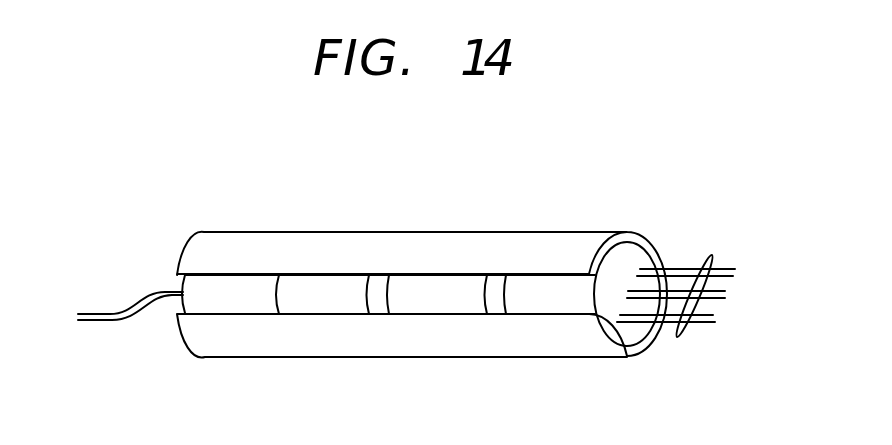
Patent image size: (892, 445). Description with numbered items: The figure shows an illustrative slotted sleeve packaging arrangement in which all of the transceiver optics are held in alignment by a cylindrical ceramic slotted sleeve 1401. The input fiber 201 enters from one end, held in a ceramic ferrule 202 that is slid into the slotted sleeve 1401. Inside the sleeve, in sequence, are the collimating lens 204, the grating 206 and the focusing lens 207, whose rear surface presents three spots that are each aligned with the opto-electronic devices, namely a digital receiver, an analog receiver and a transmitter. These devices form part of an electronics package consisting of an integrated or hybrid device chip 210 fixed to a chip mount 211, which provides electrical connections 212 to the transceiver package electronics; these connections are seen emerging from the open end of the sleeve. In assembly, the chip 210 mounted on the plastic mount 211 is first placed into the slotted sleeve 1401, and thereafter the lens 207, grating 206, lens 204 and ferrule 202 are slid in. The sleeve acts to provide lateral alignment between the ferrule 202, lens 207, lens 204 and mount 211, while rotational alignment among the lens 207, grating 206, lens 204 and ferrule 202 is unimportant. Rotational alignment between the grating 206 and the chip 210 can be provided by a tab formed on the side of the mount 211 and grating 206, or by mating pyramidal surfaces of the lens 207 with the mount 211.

The slotted sleeve 1401 is at (458, 253).
The input fiber 201 is at (85, 312).
The ceramic ferrule 202 is at (210, 298).
The collimating lens 204 is at (313, 298).
The grating 206 is at (373, 298).
The lens 207 is at (435, 298).
The hybrid device chip 210 is at (497, 298).
The chip mount 211 is at (553, 318).
The electrical connections 212 is at (713, 253).